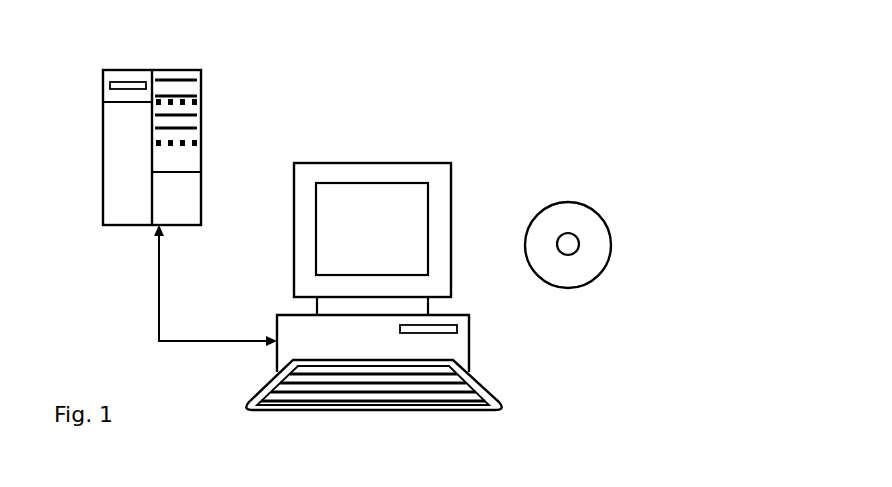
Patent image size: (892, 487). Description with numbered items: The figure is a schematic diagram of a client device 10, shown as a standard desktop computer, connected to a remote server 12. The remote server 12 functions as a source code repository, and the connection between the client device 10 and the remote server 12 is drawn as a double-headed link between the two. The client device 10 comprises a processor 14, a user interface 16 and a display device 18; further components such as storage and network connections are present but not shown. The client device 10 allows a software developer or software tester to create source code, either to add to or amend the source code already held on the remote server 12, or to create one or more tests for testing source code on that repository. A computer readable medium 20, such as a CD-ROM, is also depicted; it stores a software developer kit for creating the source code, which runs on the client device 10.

The client device 10 is at (453, 134).
The remote server 12 is at (201, 101).
The processor 14 is at (472, 350).
The user interface 16 is at (490, 393).
The display device 18 is at (451, 203).
The computer readable medium 20 is at (611, 233).